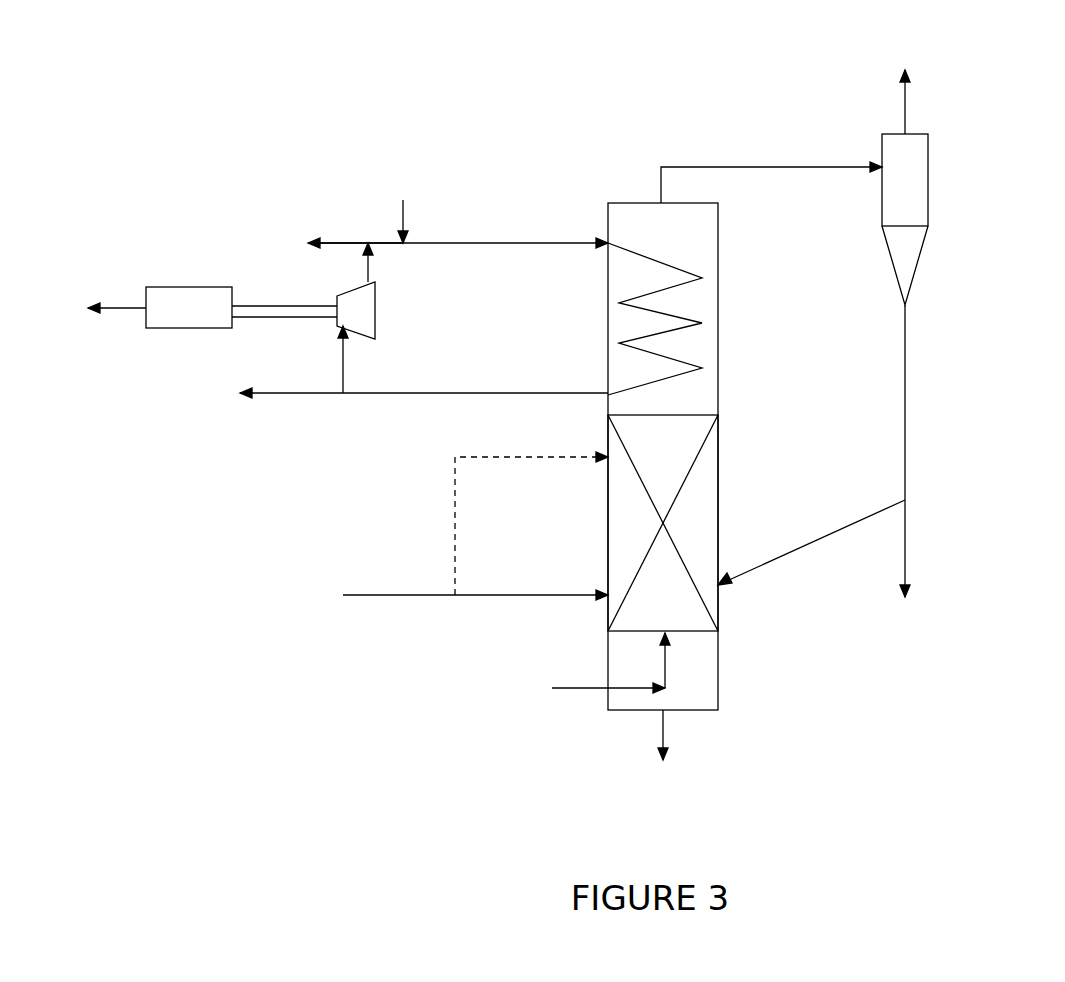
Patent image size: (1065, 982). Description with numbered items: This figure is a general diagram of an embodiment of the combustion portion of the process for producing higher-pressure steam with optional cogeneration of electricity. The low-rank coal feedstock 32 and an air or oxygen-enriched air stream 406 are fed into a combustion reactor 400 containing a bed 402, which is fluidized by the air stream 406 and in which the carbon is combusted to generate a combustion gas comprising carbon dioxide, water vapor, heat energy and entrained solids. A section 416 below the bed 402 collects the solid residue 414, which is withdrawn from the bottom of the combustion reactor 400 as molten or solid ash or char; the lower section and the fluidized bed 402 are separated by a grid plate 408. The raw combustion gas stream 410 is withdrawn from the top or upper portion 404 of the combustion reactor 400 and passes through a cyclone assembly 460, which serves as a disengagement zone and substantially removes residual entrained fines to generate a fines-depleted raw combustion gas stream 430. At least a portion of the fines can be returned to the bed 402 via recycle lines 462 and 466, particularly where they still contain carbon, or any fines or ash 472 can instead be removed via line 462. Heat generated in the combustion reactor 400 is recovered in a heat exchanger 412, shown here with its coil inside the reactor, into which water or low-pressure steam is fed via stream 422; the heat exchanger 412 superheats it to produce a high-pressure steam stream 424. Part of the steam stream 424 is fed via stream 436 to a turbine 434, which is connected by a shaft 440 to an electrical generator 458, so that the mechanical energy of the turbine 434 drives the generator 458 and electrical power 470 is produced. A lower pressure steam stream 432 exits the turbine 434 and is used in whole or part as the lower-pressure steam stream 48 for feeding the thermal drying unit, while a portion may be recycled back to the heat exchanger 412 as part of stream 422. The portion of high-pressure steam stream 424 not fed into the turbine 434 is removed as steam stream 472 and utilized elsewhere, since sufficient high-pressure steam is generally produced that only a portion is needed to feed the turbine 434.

The combustion reactor 400 is at (607, 223).
The raw combustion gas stream 410 is at (658, 183).
The top of combustion reactor 404 is at (700, 230).
The heat exchanger 412 is at (690, 330).
The bed 402 is at (700, 481).
The grid plate 408 is at (718, 631).
The section below bed 416 is at (629, 671).
The air or oxygen-enriched air stream 406 is at (580, 688).
The solid residue 414 is at (660, 754).
The cyclone assembly 460 is at (928, 212).
The fines-depleted raw combustion gas stream 430 is at (905, 81).
The recycle line 462 is at (908, 370).
The recycle line 466 is at (790, 550).
The steam stream 472 is at (555, 508).
The high-pressure steam stream 424 is at (405, 394).
The stream fed to heat exchanger 422 is at (487, 243).
The lower-pressure steam stream 48 is at (336, 246).
The lower pressure steam stream 432 is at (370, 265).
The turbine 434 is at (378, 330).
The steam feed stream to turbine 436 is at (343, 367).
The shaft 440 is at (252, 303).
The electrical generator 458 is at (189, 307).
The electrical power 470 is at (85, 309).
The low-rank coal feedstock 32 is at (455, 470).